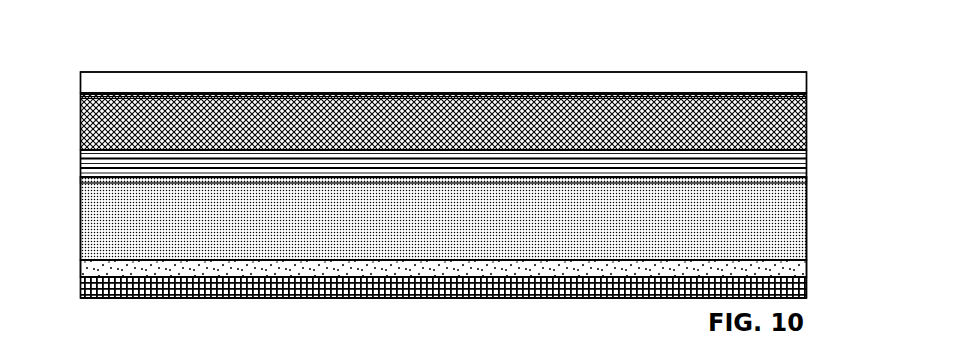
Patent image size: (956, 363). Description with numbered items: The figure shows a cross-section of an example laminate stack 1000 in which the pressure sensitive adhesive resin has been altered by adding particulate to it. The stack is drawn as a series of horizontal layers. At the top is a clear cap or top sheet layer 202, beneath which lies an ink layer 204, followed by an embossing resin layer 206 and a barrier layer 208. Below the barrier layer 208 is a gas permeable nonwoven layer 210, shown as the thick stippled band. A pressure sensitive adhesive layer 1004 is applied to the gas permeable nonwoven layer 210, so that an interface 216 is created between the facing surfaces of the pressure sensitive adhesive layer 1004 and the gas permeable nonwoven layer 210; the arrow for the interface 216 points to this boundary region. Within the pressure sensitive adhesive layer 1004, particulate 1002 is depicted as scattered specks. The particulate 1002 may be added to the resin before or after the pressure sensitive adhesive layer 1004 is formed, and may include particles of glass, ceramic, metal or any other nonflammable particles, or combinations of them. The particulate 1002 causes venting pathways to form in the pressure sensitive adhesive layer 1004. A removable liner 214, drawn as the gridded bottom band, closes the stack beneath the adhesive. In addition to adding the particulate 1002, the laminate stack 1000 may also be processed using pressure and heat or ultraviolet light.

The laminate stack 1000 is at (166, 52).
The top sheet layer 202 is at (806, 85).
The ink layer 204 is at (806, 102).
The embossing resin layer 206 is at (806, 137).
The barrier layer 208 is at (806, 173).
The gas permeable nonwoven layer 210 is at (806, 241).
The interface 216 is at (107, 253).
The pressure sensitive adhesive layer 1004 is at (832, 265).
The particulate 1002 is at (93, 269).
The removable liner 214 is at (806, 288).